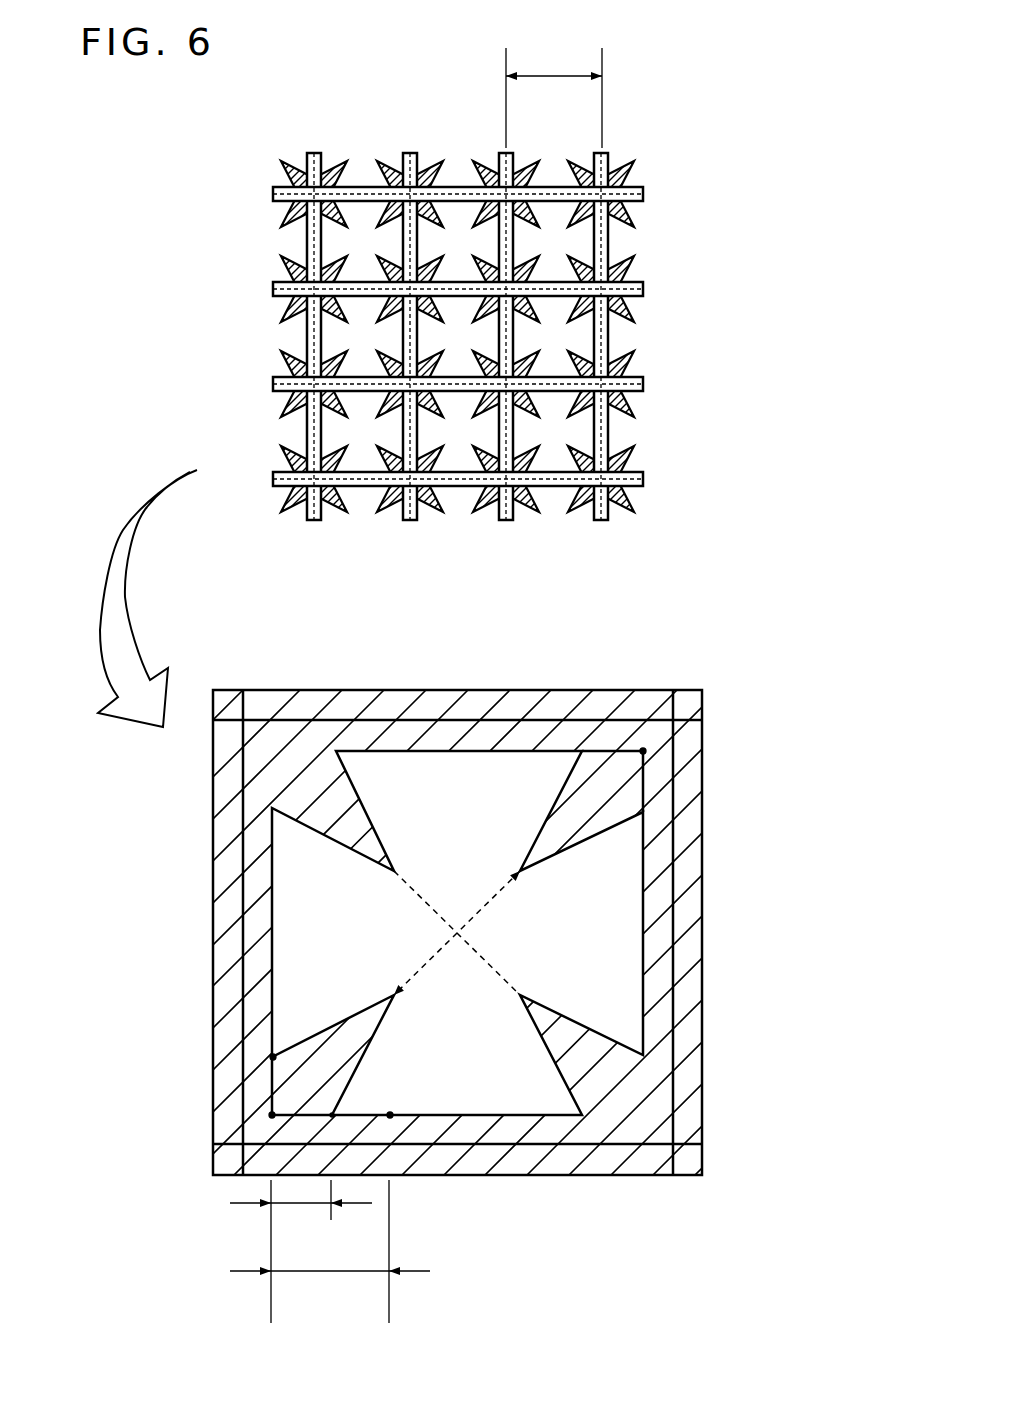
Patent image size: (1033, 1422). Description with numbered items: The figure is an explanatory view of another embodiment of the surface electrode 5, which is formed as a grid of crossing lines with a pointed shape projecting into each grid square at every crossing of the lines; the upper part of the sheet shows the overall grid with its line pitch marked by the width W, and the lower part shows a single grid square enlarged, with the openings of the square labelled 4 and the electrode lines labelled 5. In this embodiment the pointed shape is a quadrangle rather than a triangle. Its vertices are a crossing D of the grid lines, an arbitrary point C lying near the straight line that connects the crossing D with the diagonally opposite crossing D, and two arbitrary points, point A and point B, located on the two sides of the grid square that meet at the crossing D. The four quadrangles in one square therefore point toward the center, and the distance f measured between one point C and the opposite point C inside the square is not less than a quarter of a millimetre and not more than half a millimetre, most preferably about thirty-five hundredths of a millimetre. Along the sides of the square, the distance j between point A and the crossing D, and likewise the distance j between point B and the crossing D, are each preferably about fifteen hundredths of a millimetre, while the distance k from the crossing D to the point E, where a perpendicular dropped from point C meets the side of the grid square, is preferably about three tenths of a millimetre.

The opening (aperture) of mesh 4 is at (588, 252).
The surface electrode 5 is at (641, 182).
The wire pitch width W is at (554, 88).
The point A is at (332, 1115).
The point B is at (273, 1057).
The point C is at (440, 914).
The crossing D is at (643, 751).
The point E is at (392, 1115).
The distance f is at (457, 933).
The distance j is at (301, 1251).
The distance k is at (330, 1251).